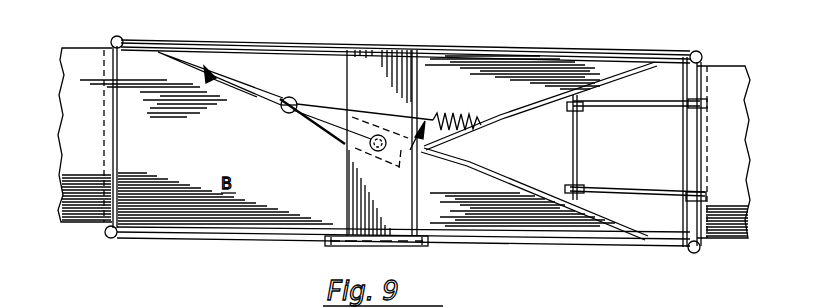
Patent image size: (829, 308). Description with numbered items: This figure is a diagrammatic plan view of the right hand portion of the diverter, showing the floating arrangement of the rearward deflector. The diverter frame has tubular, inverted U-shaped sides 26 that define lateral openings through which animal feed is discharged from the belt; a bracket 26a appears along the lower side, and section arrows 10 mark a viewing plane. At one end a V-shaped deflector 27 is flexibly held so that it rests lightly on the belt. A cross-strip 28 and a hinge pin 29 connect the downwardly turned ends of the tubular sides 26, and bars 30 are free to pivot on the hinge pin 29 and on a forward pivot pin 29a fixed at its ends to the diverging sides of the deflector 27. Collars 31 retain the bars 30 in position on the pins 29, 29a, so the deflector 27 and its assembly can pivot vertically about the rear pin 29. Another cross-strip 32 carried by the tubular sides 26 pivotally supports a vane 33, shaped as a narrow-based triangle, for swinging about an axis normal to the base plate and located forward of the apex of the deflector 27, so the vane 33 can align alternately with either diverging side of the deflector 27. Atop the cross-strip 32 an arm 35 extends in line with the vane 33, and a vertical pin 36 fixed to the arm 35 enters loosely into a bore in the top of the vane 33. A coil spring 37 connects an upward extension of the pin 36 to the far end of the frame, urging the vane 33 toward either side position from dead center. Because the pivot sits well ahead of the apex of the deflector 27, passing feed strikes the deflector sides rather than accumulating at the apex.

The tubular inverted U-shaped sides 26 is at (482, 47).
The bracket 26a is at (427, 246).
The V-shaped deflector 27 is at (530, 110).
The cross-strip 28 is at (683, 133).
The hinge pin 29 is at (705, 158).
The forward pivot pin 29a is at (578, 156).
The bars 30 is at (630, 108).
The collars 31 is at (703, 101).
The cross-strip 32 is at (398, 85).
The vane 33 is at (243, 96).
The arm 35 is at (328, 131).
The vertical pin 36 is at (284, 110).
The coil spring 37 is at (470, 116).
The section line 10 is at (325, 106).